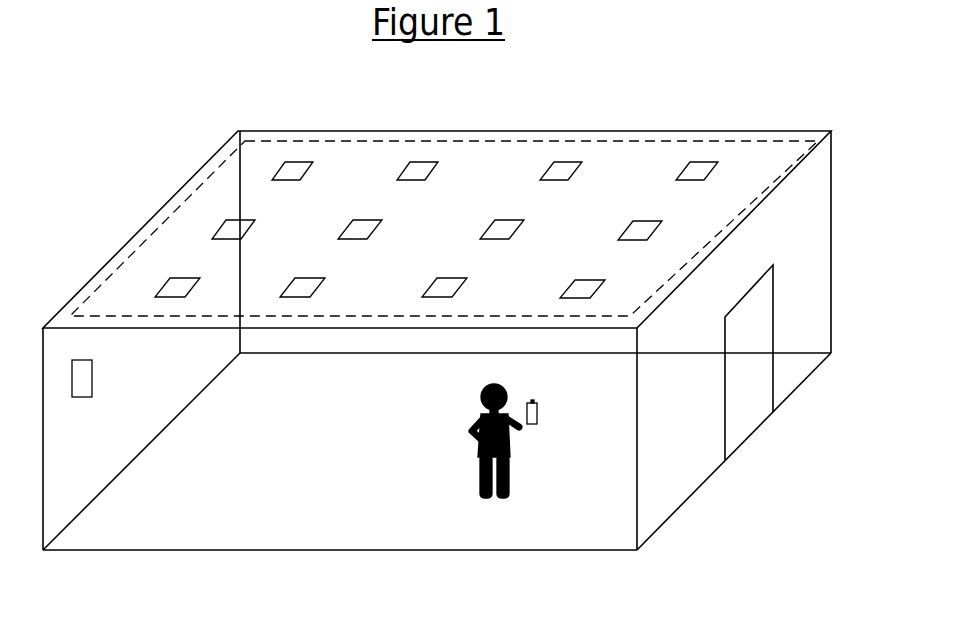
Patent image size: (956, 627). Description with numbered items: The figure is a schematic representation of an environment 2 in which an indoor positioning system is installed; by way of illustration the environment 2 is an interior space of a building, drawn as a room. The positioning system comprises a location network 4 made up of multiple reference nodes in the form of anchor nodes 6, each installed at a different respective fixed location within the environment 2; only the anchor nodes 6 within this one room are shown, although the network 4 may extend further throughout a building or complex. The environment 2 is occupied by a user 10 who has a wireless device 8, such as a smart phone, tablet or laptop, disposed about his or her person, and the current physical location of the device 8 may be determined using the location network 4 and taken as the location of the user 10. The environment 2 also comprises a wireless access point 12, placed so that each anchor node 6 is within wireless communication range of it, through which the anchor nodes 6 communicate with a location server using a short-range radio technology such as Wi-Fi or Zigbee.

The environment 2 is at (678, 131).
The location network 4 is at (530, 141).
The anchor nodes 6 is at (581, 167).
The wireless device 8 is at (539, 408).
The user 10 is at (484, 456).
The wireless access point 12 is at (92, 378).